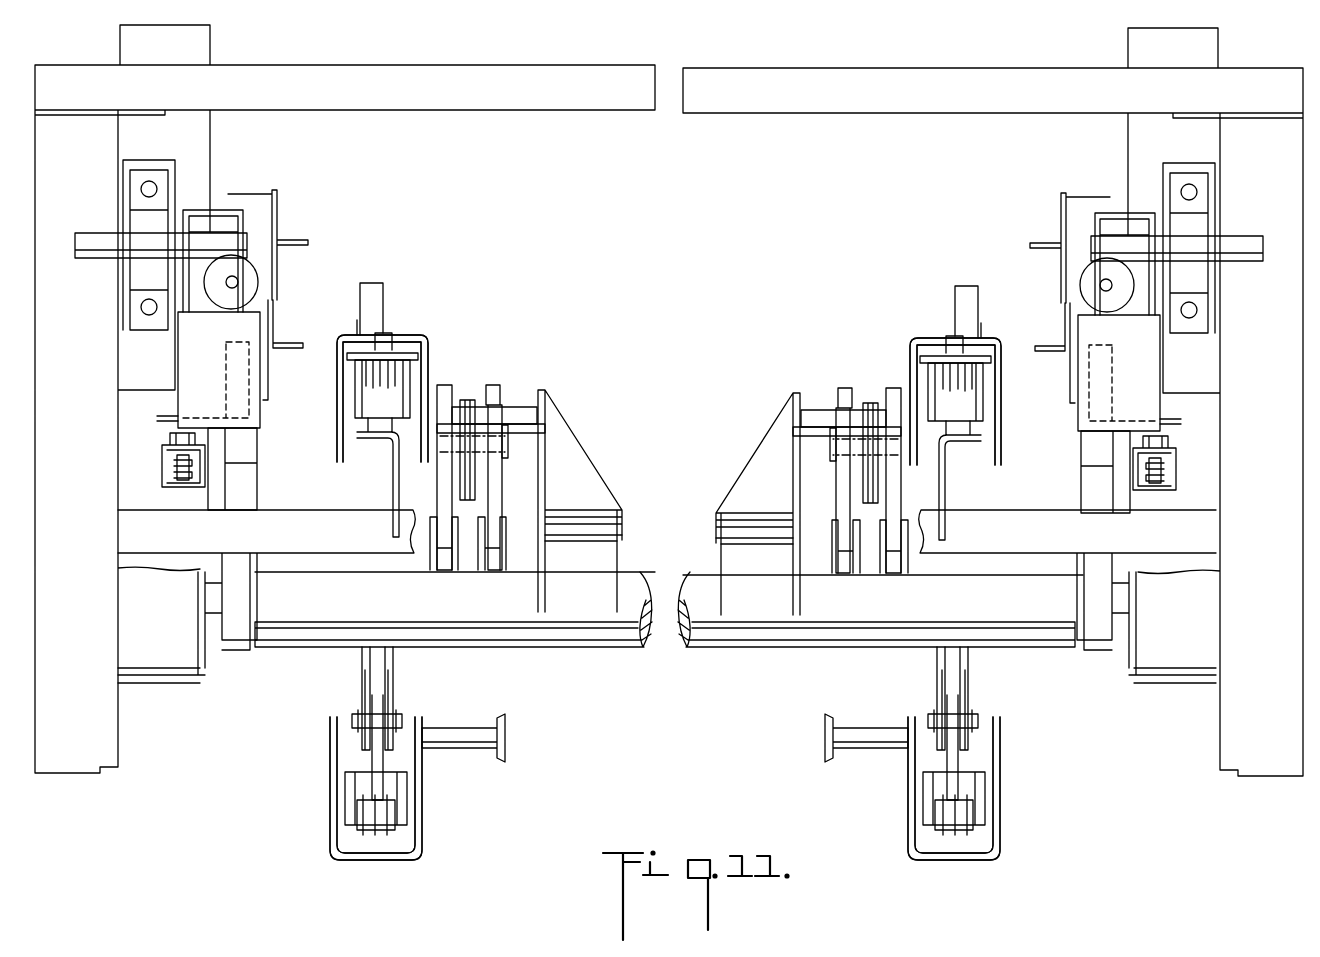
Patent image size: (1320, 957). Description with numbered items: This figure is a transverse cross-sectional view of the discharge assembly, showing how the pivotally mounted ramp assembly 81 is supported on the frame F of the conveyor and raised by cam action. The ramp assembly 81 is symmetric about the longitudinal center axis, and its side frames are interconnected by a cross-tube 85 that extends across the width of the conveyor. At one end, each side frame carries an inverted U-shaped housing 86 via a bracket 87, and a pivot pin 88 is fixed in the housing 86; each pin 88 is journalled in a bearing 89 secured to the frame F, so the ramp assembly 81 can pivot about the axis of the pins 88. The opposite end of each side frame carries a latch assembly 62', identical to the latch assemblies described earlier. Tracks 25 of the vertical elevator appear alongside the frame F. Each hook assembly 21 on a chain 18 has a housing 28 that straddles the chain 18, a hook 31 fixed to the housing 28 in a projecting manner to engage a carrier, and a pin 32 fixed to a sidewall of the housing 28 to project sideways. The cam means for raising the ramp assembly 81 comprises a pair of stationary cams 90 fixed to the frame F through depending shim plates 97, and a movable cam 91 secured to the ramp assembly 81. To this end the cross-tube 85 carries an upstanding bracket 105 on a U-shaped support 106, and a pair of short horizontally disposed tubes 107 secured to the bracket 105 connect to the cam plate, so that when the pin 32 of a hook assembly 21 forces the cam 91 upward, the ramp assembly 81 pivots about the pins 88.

The chain 18 is at (376, 378).
The hook assembly 21 is at (432, 336).
The tracks 25 is at (286, 240).
The housing 28 is at (337, 405).
The hook 31 is at (383, 290).
The pin 32 is at (505, 450).
The latch assembly 62' is at (669, 283).
The ramp assembly 81 is at (262, 465).
The cross-tube 85 is at (688, 645).
The inverted U-shaped housing 86 is at (192, 210).
The bracket 87 is at (183, 360).
The pivot pin 88 is at (80, 232).
The bearing 89 is at (140, 188).
The stationary cams 90 is at (490, 385).
The movable cam 91 is at (468, 398).
The shim plates 97 is at (430, 555).
The upstanding bracket 105 is at (575, 456).
The U-shaped support 106 is at (712, 549).
The tubes 107 is at (521, 407).
The frame F is at (108, 465).